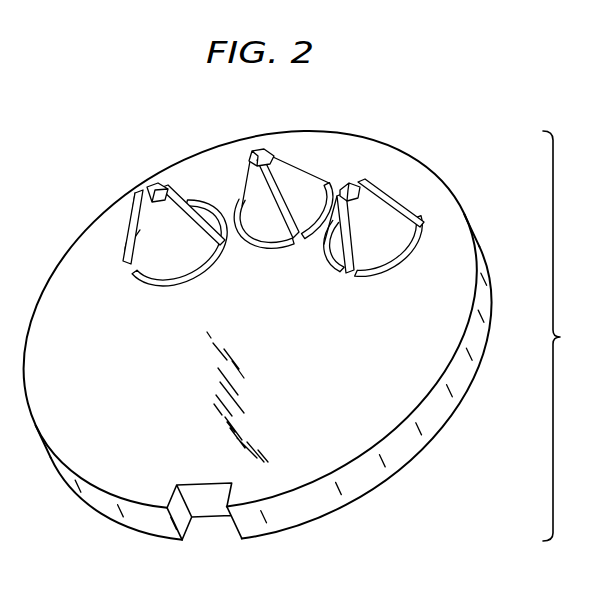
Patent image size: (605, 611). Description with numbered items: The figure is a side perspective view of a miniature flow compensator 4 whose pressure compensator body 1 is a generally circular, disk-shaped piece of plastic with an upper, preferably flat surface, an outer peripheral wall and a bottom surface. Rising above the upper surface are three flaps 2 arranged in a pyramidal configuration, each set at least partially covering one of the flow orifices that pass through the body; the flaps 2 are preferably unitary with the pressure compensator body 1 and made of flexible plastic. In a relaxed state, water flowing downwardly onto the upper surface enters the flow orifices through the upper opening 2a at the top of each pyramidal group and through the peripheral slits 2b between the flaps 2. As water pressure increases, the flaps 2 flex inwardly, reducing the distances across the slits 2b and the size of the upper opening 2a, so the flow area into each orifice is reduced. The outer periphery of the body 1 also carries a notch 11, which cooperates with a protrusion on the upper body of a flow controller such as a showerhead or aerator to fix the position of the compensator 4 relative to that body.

The pressure compensator body 1 is at (412, 319).
The flap 2 is at (295, 183).
The upper opening 2a is at (140, 184).
The peripheral slit 2b is at (128, 222).
The miniature flow compensator 4 is at (559, 336).
The notch 11 is at (204, 495).